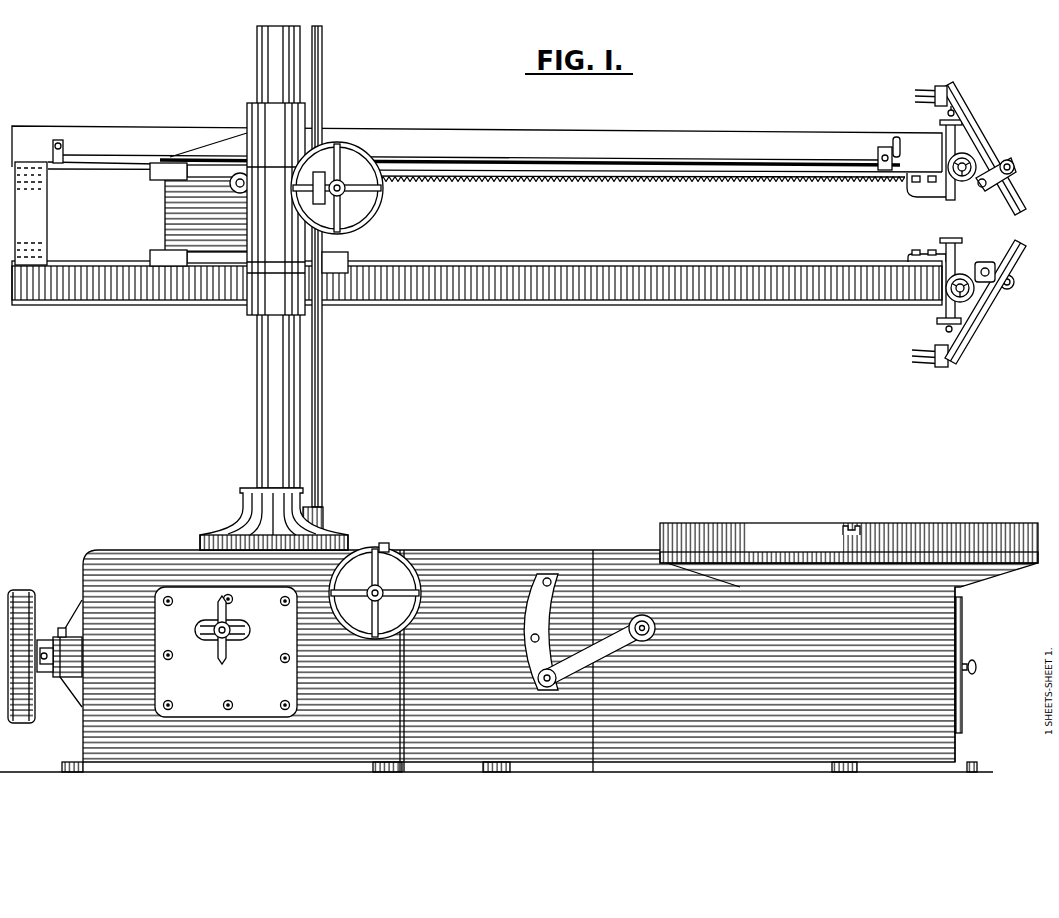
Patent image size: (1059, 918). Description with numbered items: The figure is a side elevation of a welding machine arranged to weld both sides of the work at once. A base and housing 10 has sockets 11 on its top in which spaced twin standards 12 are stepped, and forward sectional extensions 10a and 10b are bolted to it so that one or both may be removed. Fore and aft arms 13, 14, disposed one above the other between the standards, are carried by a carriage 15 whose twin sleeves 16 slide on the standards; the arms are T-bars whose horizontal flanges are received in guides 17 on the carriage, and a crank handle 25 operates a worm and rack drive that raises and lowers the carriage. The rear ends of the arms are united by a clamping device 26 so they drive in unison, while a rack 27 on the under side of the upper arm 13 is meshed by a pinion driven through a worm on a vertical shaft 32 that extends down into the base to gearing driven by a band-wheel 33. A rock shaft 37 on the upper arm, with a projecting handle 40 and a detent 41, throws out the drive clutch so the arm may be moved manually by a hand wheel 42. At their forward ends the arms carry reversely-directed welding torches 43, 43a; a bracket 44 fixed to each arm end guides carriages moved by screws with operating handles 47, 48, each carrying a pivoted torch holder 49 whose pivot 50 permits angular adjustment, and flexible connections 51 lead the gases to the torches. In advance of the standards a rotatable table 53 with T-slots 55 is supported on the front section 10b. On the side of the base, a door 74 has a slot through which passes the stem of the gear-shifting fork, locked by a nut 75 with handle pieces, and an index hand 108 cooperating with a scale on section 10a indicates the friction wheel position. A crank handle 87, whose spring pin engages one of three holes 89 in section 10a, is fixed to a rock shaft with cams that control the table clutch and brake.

The base and housing 10 is at (139, 552).
The forward sectional extension 10a is at (497, 556).
The front section 10b is at (960, 654).
The sockets 11 is at (248, 490).
The twin standards 12 is at (255, 390).
The upper arm 13 is at (611, 136).
The lower arm 14 is at (739, 305).
The carriage 15 is at (165, 229).
The twin sleeves 16 is at (303, 118).
The guides 17 is at (150, 177).
The crank handle 25 is at (248, 172).
The clamping device 26 is at (35, 223).
The rack 27 is at (604, 183).
The vertical shaft 32 is at (319, 432).
The band-wheel 33 is at (33, 591).
The rock shaft 37 is at (700, 163).
The handle 40 is at (898, 137).
The detent 41 is at (882, 147).
The hand wheel 42 is at (382, 212).
The upper torch 43 is at (986, 144).
The lower torch 43a is at (975, 346).
The bracket 44 is at (930, 196).
The screw operating handle 47 is at (945, 125).
The screw operating handle 48 is at (963, 182).
The torch holder 49 is at (985, 181).
The pivot 50 is at (983, 265).
The flexible connections 51 is at (925, 89).
The rotatable table 53 is at (726, 522).
The T-slots 55 is at (849, 524).
The door 74 is at (250, 630).
The nut 75 is at (222, 638).
The crank handle 87 is at (604, 640).
The holes 89 is at (551, 578).
The index hand 108 is at (366, 545).